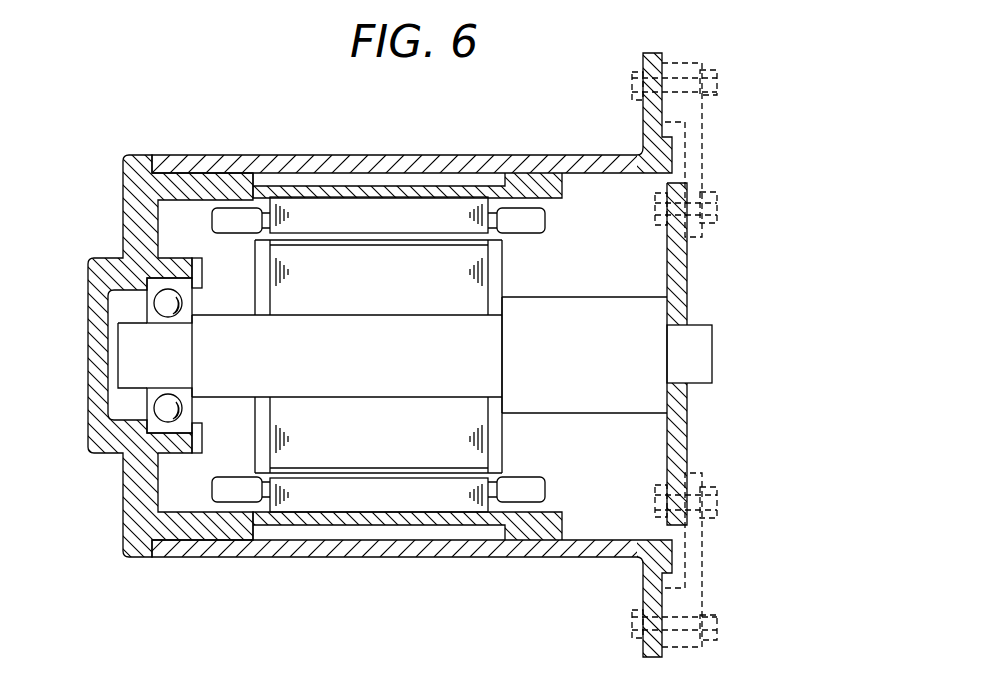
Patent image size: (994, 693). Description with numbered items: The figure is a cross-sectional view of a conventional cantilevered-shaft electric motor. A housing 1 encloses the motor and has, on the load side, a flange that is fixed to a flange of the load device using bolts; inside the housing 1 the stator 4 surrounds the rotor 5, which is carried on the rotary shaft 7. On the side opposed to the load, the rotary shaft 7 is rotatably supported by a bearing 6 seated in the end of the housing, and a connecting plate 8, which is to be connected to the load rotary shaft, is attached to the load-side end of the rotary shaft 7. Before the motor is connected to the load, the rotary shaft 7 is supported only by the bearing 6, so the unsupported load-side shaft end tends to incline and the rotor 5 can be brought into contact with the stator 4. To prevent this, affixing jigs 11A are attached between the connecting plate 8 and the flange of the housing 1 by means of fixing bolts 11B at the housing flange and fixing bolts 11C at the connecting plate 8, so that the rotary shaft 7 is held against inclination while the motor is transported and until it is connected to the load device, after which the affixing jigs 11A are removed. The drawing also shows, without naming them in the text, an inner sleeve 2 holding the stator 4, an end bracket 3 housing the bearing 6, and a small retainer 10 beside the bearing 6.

The housing 1 is at (232, 166).
The stator holder 2 is at (533, 180).
The end bracket 3 is at (140, 190).
The stator 4 is at (355, 213).
The rotor 5 is at (423, 260).
The bearing 6 is at (163, 300).
The rotary shaft 7 is at (605, 390).
The connecting plate 8 is at (677, 282).
The bearing retainer 10 is at (198, 267).
The affixing jig 11A is at (692, 145).
The fixing bolt 11B is at (712, 82).
The fixing bolt 11C is at (718, 206).